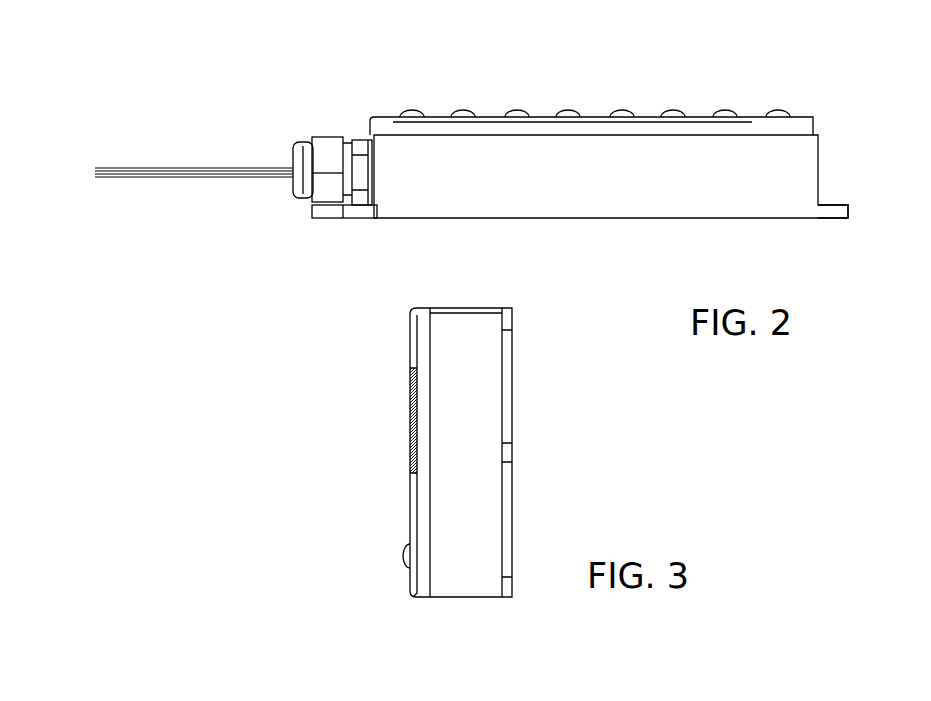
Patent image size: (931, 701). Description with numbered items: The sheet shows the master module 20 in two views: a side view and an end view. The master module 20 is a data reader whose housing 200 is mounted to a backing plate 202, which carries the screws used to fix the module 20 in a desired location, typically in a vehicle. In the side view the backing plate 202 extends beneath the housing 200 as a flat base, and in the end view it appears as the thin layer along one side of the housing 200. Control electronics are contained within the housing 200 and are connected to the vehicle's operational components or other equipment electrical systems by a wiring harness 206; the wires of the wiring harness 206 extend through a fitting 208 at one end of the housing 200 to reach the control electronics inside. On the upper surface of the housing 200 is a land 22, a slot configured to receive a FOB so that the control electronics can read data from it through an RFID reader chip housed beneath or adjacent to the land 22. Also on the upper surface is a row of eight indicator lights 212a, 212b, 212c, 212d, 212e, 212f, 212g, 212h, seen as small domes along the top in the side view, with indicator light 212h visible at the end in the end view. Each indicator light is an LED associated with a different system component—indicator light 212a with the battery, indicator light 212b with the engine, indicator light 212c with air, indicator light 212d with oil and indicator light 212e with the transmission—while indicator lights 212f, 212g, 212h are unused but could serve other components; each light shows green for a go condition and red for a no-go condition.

In FIG. 2, the master module 20 is at (609, 227).
In FIG. 3, the master module 20 is at (526, 349).
In FIG. 3, the land 22 is at (412, 400).
In FIG. 2, the housing 200 is at (732, 197).
In FIG. 3, the housing 200 is at (450, 518).
In FIG. 2, the backing plate 202 is at (838, 205).
In FIG. 3, the backing plate 202 is at (508, 390).
In FIG. 2, the wiring harness 206 is at (130, 178).
In FIG. 2, the fitting 208 is at (320, 163).
In FIG. 2, the indicator light 212a is at (412, 110).
In FIG. 2, the indicator light 212b is at (462, 110).
In FIG. 2, the indicator light 212c is at (515, 110).
In FIG. 2, the indicator light 212d is at (568, 110).
In FIG. 2, the indicator light 212e is at (622, 110).
In FIG. 2, the indicator light 212f is at (673, 110).
In FIG. 2, the indicator light 212g is at (725, 110).
In FIG. 2, the indicator light 212h is at (778, 110).
In FIG. 3, the indicator light 212h is at (410, 550).